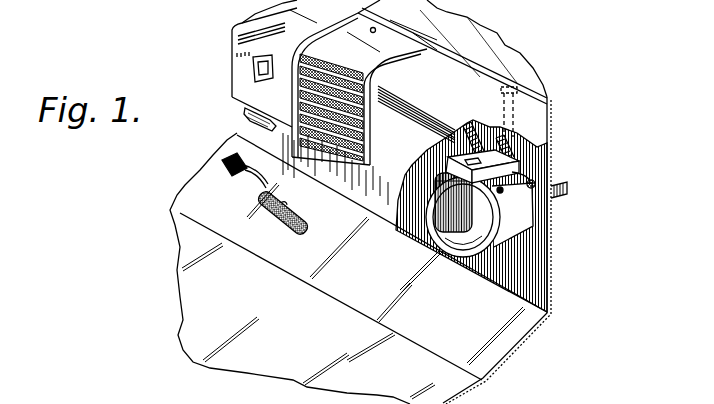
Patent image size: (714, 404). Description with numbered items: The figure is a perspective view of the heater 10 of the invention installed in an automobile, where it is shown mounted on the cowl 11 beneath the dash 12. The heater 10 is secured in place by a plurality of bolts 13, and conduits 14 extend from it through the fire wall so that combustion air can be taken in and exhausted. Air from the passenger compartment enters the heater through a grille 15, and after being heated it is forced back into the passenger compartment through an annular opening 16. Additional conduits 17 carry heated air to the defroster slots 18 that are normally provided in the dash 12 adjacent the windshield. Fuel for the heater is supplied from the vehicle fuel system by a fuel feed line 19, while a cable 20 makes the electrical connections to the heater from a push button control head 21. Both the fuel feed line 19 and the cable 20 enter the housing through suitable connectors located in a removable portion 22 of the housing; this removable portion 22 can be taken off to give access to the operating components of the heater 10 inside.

The heater 10 is at (491, 210).
The cowl 11 is at (548, 182).
The dash 12 is at (438, 83).
The bolts 13 is at (535, 184).
The conduits 14 is at (560, 196).
The grille 15 is at (443, 227).
The annular opening 16 is at (500, 253).
The conduits 17 is at (460, 130).
The defroster slots 18 is at (512, 84).
The fuel feed line 19 is at (533, 174).
The cable 20 is at (520, 152).
The push button control head 21 is at (252, 112).
The removable portion 22 is at (527, 223).